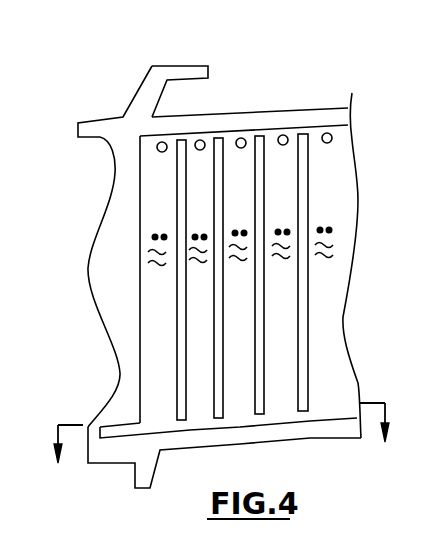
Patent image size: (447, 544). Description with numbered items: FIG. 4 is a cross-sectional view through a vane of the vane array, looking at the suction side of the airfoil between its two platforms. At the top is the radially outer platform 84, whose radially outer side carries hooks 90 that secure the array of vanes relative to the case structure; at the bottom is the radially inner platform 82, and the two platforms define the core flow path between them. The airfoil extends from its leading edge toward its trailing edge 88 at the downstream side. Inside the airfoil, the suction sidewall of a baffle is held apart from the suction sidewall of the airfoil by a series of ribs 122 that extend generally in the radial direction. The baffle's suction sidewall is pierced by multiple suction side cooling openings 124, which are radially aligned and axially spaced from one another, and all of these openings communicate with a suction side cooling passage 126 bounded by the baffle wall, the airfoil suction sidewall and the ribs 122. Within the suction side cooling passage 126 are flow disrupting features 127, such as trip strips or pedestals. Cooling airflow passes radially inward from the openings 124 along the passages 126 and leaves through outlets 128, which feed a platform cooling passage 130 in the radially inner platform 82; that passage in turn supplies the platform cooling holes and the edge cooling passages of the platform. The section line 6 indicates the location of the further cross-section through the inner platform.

The hooks 90 is at (188, 66).
The radially outer platform 84 is at (78, 128).
The trailing edge 88 is at (88, 268).
The radially inner platform 82 is at (88, 430).
The platform cooling passage 130 is at (114, 430).
The ribs 122 is at (186, 140).
The suction side cooling openings 124 is at (250, 128).
The flow disrupting features 127 is at (147, 263).
The suction side cooling passage 126 is at (192, 344).
The outlets 128 is at (196, 402).
The section line 6- 6 is at (224, 434).